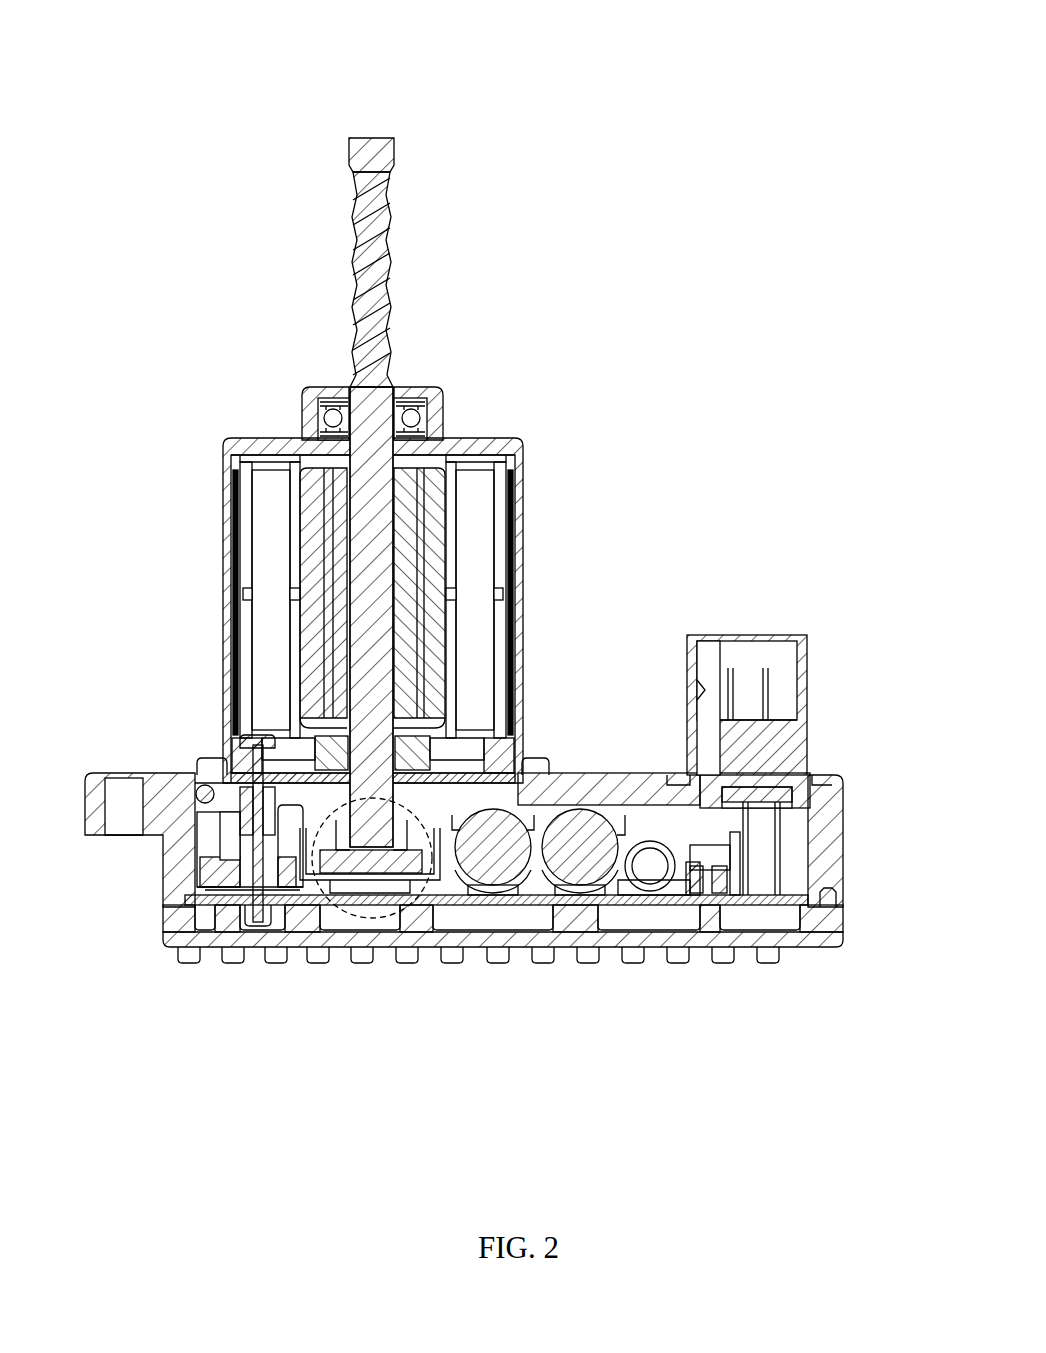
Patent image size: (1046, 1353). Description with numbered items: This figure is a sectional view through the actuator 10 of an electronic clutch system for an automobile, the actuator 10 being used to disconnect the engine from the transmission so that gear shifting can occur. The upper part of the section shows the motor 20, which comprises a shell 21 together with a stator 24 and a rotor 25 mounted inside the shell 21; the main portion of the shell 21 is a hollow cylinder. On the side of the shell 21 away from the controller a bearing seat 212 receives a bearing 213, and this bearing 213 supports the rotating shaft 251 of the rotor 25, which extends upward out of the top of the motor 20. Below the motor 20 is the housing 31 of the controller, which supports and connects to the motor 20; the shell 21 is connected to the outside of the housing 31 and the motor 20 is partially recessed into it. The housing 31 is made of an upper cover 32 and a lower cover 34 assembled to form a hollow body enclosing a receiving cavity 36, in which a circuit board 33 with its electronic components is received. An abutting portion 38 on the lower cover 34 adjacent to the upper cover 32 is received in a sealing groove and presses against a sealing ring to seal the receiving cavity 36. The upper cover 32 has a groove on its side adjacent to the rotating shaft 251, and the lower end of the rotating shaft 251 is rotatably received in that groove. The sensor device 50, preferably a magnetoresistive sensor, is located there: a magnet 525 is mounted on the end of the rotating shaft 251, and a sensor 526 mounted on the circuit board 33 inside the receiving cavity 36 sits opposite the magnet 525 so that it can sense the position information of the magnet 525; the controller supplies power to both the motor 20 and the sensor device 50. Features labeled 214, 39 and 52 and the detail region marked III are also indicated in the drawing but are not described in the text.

The actuator 10 is at (247, 47).
The motor 20 is at (155, 405).
The shell 21 is at (228, 600).
The stator 24 is at (478, 572).
The rotor 25 is at (420, 527).
The rotating shaft 251 is at (378, 235).
The bearing seat 212 is at (325, 393).
The bearing 213 is at (305, 413).
The mounting flange 214 is at (200, 763).
The housing 31 is at (815, 962).
The upper cover 32 is at (826, 822).
The circuit board 33 is at (592, 912).
The lower cover 34 is at (830, 935).
The receiving cavity 36 is at (697, 825).
The abutting portion 38 is at (834, 898).
The connector 39 is at (785, 700).
The sensor device 50 is at (433, 1088).
The screw 52 is at (245, 910).
The magnet 525 is at (340, 972).
The sensor 526 is at (385, 910).
The detail view III is at (358, 913).